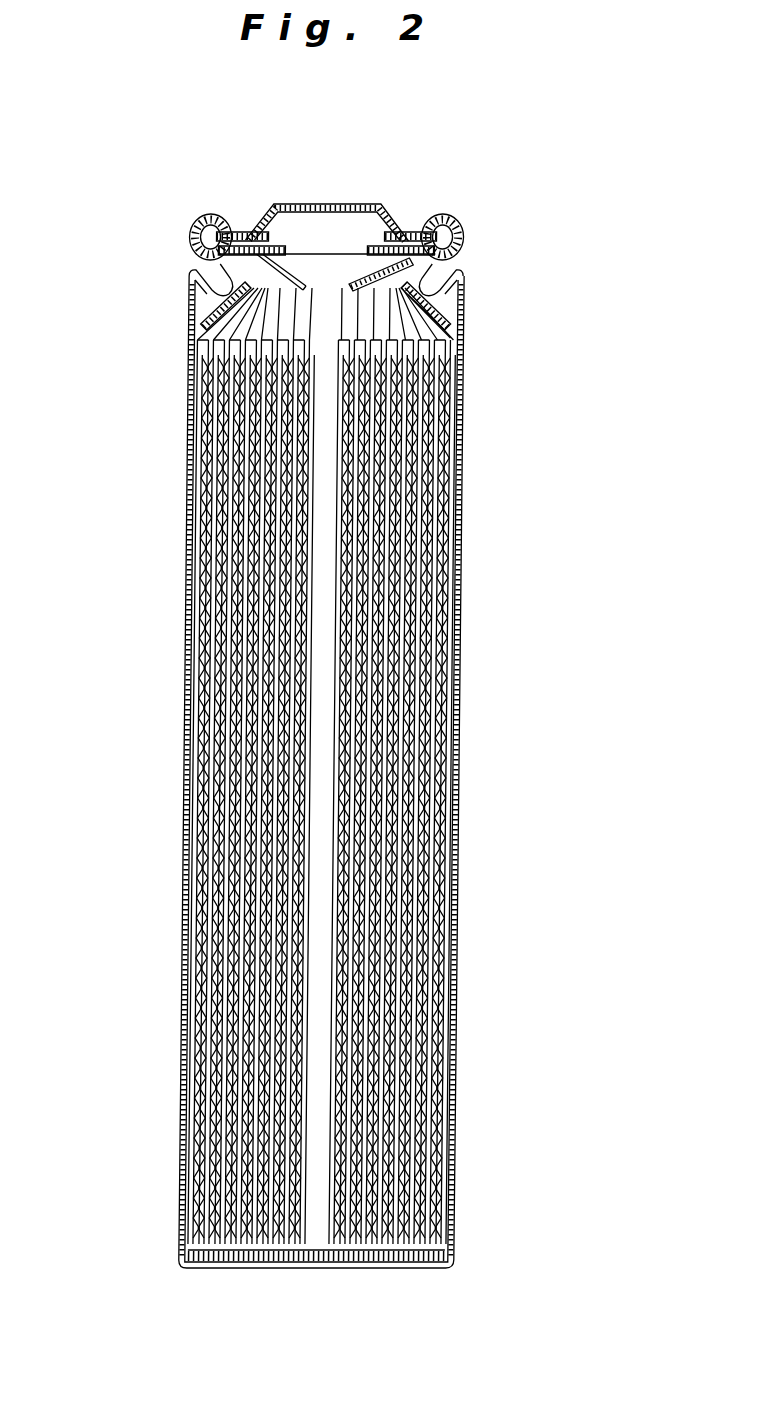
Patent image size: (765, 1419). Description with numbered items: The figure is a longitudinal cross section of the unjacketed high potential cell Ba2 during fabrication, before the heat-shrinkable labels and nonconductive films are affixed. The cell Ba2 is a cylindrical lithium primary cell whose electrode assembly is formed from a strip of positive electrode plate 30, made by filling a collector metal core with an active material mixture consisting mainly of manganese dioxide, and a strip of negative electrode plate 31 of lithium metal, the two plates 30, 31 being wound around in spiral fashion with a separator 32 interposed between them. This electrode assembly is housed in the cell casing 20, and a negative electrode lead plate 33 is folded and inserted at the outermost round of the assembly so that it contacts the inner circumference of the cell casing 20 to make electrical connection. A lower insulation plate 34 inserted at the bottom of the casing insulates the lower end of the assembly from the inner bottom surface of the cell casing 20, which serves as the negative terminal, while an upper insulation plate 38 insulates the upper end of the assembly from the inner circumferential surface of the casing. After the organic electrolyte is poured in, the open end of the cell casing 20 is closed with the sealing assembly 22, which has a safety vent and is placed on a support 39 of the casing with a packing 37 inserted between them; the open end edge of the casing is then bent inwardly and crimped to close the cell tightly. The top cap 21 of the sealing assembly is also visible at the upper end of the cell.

The high potential cell Ba2 is at (172, 645).
The cell casing 20 is at (455, 328).
The cap / sealing plate 21 is at (310, 198).
The sealing assembly 22 is at (390, 218).
The positive electrode plate 30 is at (368, 766).
The negative electrode plate 31 is at (425, 502).
The separator 32 is at (420, 575).
The negative electrode lead plate 33 is at (450, 947).
The lower insulation plate 34 is at (307, 1262).
The packing 37 is at (457, 238).
The upper insulation plate 38 is at (203, 300).
The support 39 is at (293, 250).